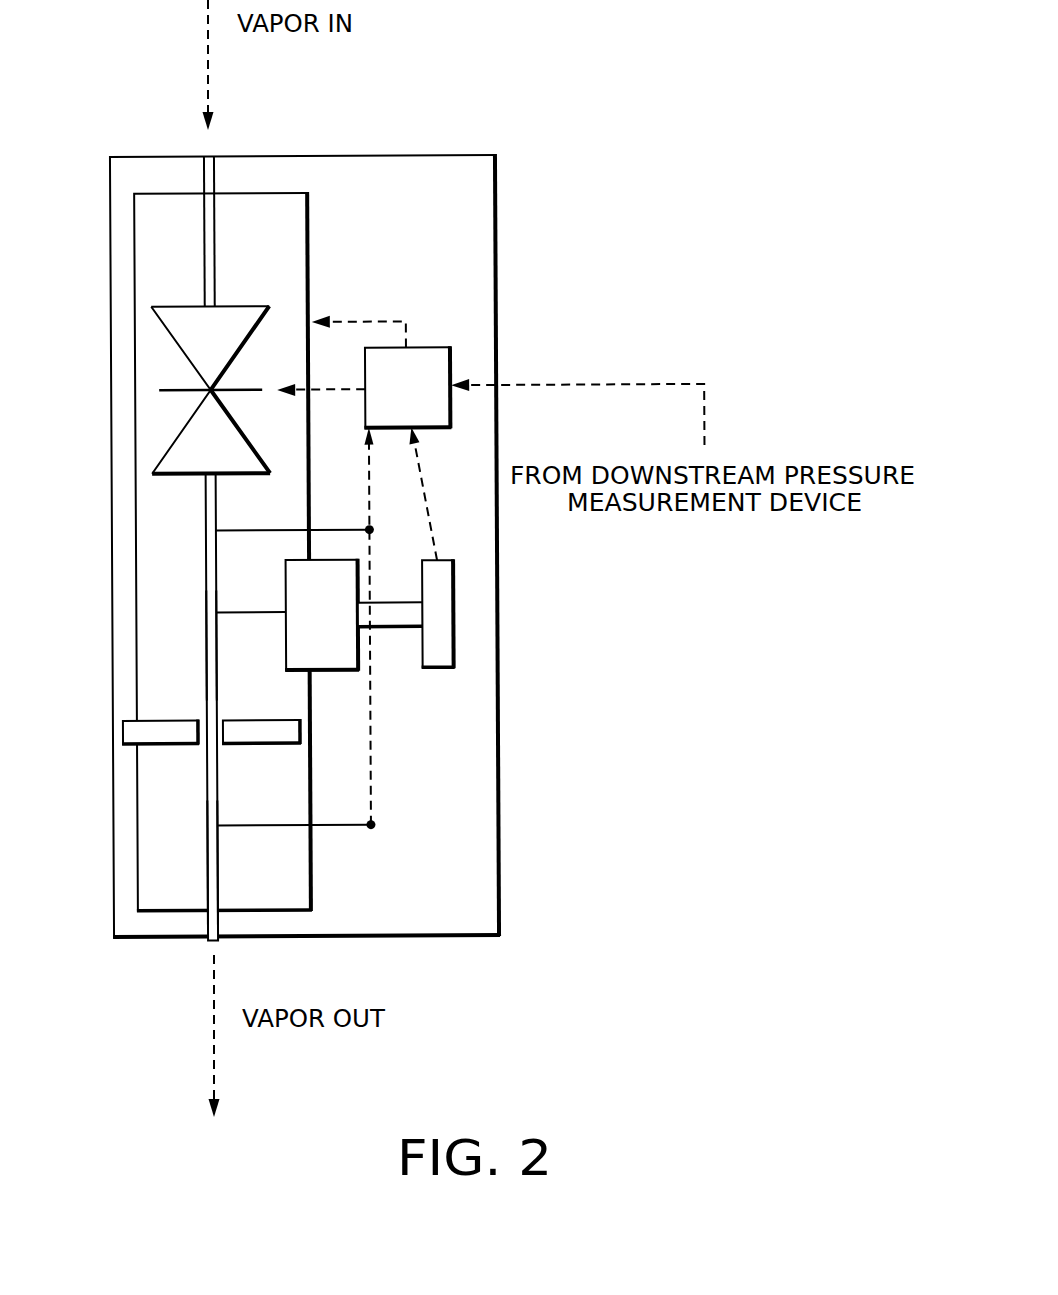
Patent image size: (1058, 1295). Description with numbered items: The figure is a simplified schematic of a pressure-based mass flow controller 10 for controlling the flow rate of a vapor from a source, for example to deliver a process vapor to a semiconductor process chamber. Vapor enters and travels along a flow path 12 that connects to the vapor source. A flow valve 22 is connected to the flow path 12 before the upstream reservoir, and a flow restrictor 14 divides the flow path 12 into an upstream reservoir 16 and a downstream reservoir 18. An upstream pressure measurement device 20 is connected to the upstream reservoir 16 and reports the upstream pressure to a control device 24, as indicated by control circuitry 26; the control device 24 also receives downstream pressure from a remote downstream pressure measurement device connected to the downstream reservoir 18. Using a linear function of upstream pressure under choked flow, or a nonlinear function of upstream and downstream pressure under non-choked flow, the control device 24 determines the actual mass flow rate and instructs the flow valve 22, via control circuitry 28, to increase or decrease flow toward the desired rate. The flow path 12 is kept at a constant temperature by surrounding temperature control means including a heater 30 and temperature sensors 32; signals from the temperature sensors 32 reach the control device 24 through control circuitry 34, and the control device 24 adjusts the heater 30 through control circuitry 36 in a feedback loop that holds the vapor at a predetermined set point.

The pressure-based mass flow controller 10 is at (553, 177).
The flow path 12 is at (190, 502).
The flow restrictor 14 is at (123, 729).
The upstream reservoir 16 is at (205, 642).
The downstream reservoir 18 is at (206, 867).
The upstream pressure measurement device 20 is at (453, 635).
The flow valve 22 is at (188, 358).
The control device 24 is at (451, 362).
The control circuitry 26 is at (420, 468).
The control circuitry 28 is at (327, 395).
The heater 30 is at (309, 212).
The temperature sensors 32 is at (250, 530).
The control circuitry 34 is at (372, 768).
The control circuitry 36 is at (400, 312).